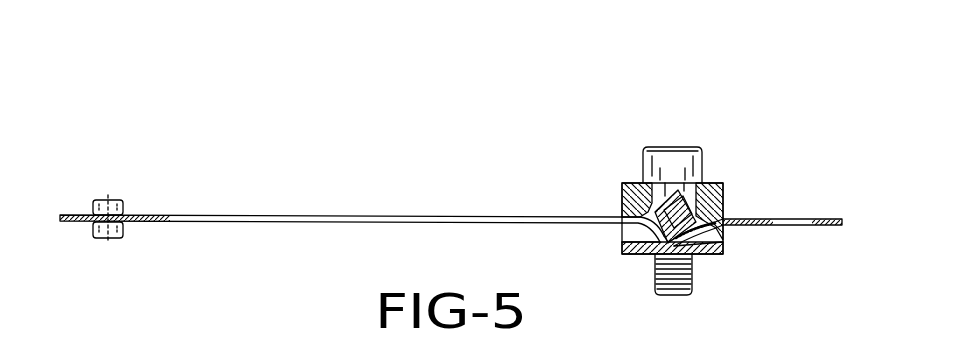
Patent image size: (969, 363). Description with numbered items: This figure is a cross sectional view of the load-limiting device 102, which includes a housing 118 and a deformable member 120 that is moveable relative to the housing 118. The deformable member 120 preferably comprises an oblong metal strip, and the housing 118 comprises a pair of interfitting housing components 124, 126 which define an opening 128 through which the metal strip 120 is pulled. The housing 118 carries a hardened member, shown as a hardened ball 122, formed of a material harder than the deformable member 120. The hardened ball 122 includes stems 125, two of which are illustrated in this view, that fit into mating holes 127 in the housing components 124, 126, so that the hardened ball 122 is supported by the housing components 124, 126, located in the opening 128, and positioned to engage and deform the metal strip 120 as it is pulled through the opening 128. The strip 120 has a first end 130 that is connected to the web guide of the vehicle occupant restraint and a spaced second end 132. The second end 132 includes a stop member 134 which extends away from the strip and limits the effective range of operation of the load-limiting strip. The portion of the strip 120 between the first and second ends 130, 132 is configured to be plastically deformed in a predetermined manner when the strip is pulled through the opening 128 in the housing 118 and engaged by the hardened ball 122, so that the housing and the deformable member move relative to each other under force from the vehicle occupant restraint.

The load-limiting device 102 is at (276, 148).
The housing 118 is at (611, 178).
The deformable member 120 is at (366, 208).
The hardened ball 122 is at (691, 205).
The housing component 124 is at (628, 203).
The stem 125 is at (682, 194).
The housing component 126 is at (628, 251).
The mating hole 127 is at (686, 193).
The opening 128 is at (722, 237).
The first end 130 is at (834, 236).
The second end 132 is at (68, 208).
The stop member 134 is at (113, 200).